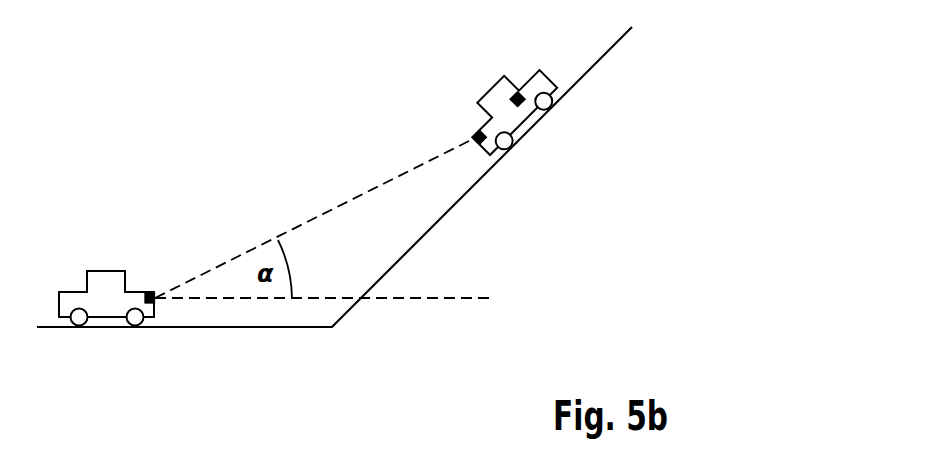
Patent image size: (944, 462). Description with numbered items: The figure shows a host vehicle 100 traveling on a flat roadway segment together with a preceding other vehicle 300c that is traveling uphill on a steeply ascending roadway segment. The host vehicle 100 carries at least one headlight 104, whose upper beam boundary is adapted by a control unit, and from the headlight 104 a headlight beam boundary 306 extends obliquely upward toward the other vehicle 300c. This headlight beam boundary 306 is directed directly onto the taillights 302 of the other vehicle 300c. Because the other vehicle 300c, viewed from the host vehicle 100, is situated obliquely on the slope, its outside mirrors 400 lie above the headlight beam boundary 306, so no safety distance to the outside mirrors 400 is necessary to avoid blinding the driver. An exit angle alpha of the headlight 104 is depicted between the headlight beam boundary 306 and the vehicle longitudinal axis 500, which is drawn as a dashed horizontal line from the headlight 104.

The vehicle 100 is at (105, 270).
The headlight 104 is at (149, 292).
The other vehicle 300c is at (492, 92).
The taillights 302 is at (477, 137).
The outside mirrors 400 is at (537, 110).
The headlight beam boundary 306 is at (327, 212).
The vehicle longitudinal axis 500 is at (415, 302).